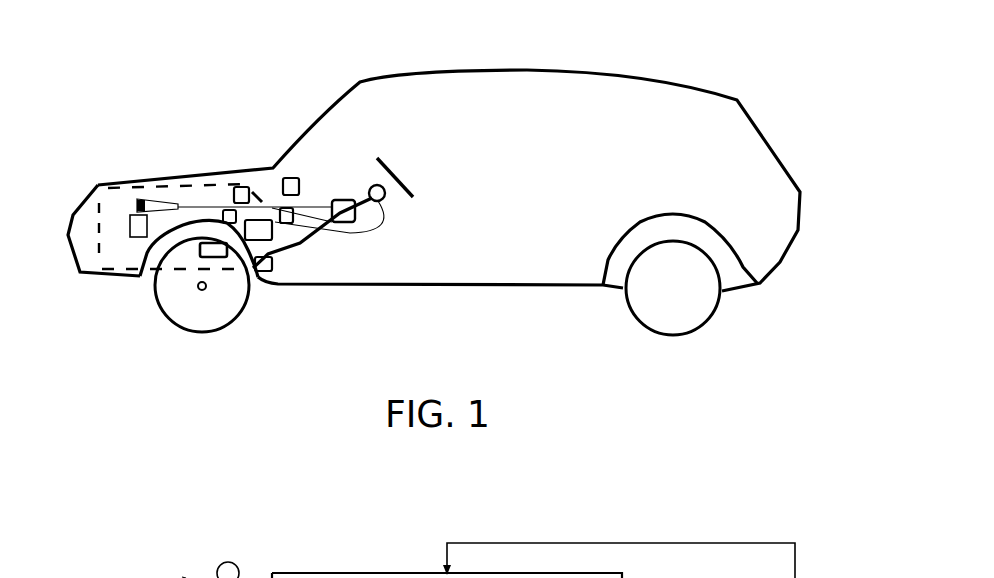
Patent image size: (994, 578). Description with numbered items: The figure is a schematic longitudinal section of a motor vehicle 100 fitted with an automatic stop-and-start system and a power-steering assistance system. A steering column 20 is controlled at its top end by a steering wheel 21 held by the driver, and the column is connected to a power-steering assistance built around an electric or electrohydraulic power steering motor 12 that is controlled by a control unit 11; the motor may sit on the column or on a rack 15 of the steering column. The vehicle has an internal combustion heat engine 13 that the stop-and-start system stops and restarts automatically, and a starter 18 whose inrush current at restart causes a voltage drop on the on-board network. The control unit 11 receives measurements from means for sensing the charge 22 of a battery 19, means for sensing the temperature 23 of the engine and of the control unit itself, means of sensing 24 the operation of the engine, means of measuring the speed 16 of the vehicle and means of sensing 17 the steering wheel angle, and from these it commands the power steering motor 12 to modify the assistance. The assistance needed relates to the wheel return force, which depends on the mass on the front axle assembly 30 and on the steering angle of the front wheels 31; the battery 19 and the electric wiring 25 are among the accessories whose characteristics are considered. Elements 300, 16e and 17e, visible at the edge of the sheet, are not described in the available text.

In FIG. 1, the motor vehicle 100 is at (688, 55).
In FIG. 1, the heat engine 13 is at (115, 213).
In FIG. 1, the battery 19 is at (138, 227).
In FIG. 1, the electric wiring 25 is at (182, 202).
In FIG. 1, the means of measuring the speed 16 is at (207, 243).
In FIG. 1, the starter 18 is at (242, 186).
In FIG. 1, the means for sensing the temperature 23 is at (293, 178).
In FIG. 1, the control unit 11 is at (274, 240).
In FIG. 1, the means of sensing the operation of the engine 24 is at (290, 223).
In FIG. 1, the rack 15 is at (268, 272).
In FIG. 1, the means for sensing the charge 22 is at (232, 252).
In FIG. 1, the power steering motor 12 is at (348, 223).
In FIG. 1, the means of sensing the steering wheel angle 17 is at (380, 200).
In FIG. 1, the steering wheel 21 is at (392, 178).
In FIG. 1, the steering column 20 is at (351, 191).
In FIG. 1, the front wheels 31 is at (200, 303).
In FIG. 1, the front axle assembly 30 is at (196, 291).
In FIG. 2, the control system 300 is at (632, 577).
In FIG. 2, the sensor 17e is at (230, 570).
In FIG. 2, the sensor 16e is at (182, 577).